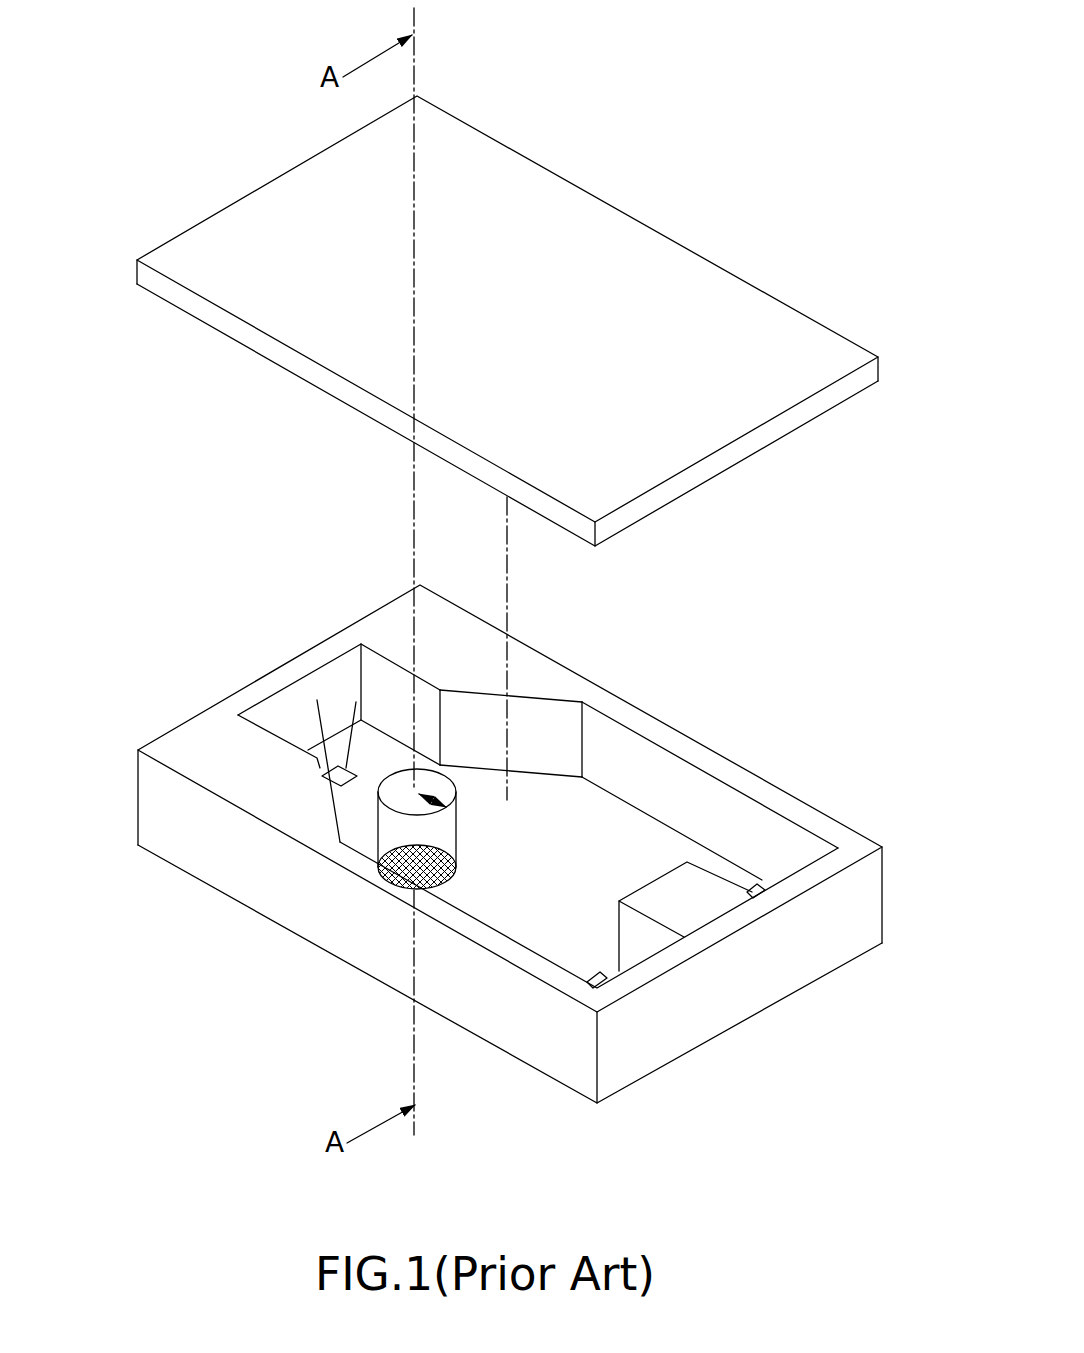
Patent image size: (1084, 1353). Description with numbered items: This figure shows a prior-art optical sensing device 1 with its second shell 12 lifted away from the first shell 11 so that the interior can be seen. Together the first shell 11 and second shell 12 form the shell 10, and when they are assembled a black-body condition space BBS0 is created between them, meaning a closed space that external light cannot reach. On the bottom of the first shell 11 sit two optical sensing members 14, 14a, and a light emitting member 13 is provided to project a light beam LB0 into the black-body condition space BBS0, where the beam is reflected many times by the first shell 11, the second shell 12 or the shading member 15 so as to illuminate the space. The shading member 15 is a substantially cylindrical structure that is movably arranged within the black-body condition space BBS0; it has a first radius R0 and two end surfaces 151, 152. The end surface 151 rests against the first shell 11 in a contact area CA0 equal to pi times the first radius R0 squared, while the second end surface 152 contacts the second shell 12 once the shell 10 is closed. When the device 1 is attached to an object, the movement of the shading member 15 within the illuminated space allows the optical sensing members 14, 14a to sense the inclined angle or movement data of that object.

The optical sensing device 1 is at (730, 166).
The shell 10 is at (847, 571).
The first shell 11 is at (828, 834).
The second shell 12 is at (789, 331).
The light emitting member 13 is at (325, 780).
The optical sensing member 14 is at (605, 986).
The optical sensing member 14a is at (755, 897).
The shading member 15 is at (447, 728).
The end surface 151 is at (433, 888).
The second end surface 152 is at (393, 790).
The light beam LB0 is at (337, 740).
The first radius R0 is at (443, 803).
The black-body condition space BBS0 is at (685, 798).
The contact area CA0 is at (383, 858).